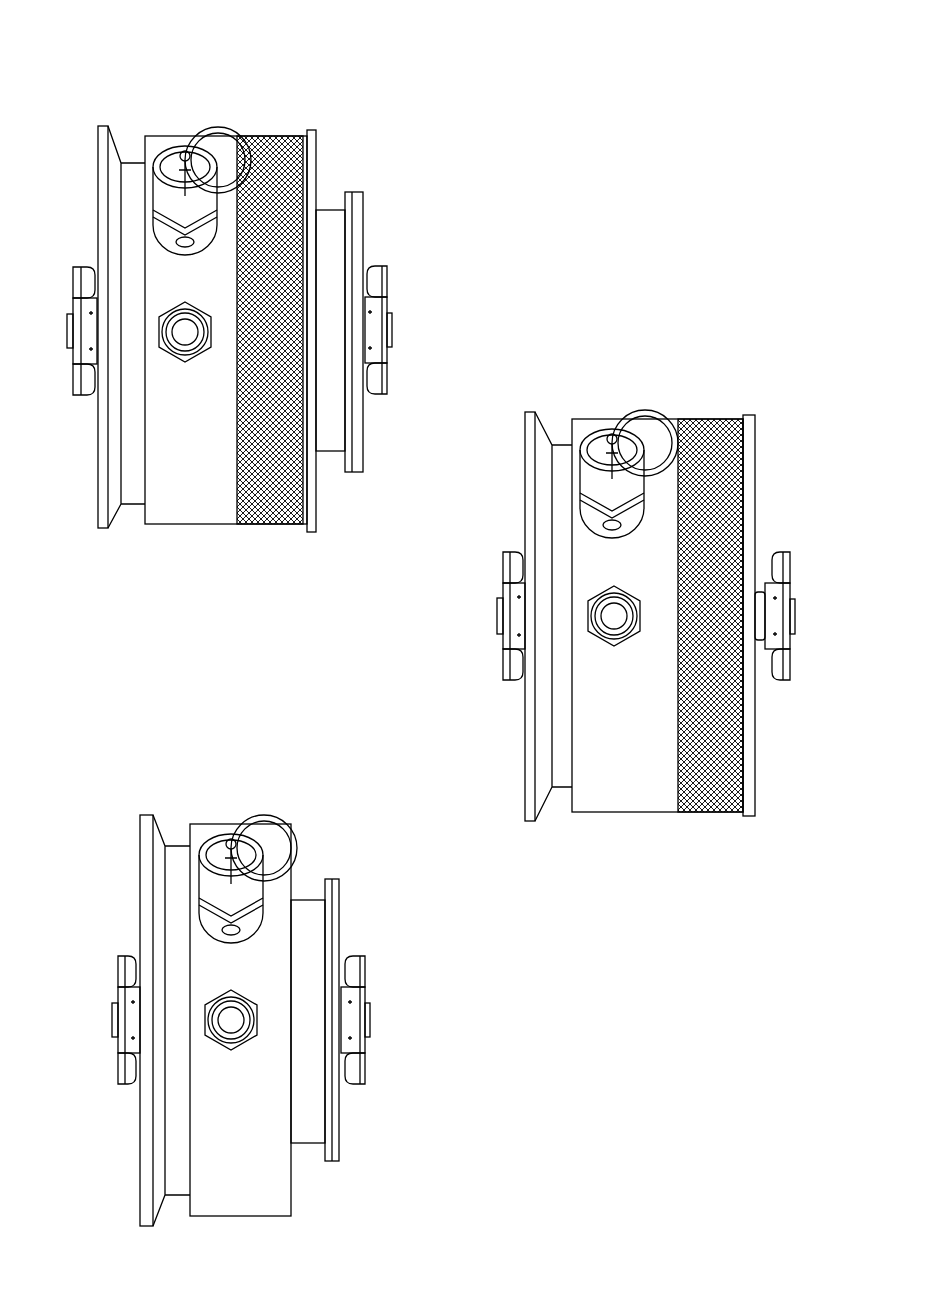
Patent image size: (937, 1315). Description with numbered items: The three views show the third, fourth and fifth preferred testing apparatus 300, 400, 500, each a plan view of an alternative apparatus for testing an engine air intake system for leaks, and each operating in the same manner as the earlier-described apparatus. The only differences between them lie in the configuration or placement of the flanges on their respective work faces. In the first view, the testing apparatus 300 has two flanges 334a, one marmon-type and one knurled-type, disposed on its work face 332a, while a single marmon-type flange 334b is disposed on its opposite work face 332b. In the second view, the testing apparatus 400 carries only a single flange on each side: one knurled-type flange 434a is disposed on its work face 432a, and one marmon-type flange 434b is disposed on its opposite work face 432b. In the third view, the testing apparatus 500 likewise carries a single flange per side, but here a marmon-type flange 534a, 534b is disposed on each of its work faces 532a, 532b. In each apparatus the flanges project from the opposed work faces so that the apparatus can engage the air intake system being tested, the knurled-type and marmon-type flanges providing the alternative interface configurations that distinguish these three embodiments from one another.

In FIG. 5a, the testing apparatus 300 is at (437, 143).
In FIG. 5a, the flange 334b is at (132, 153).
In FIG. 5a, the flanges 334a is at (328, 208).
In FIG. 5a, the work face 332b is at (64, 330).
In FIG. 5a, the work face 332a is at (412, 329).
In FIG. 5b, the testing apparatus 400 is at (697, 270).
In FIG. 5b, the flange 434b is at (564, 448).
In FIG. 5b, the flange 434a is at (712, 414).
In FIG. 5b, the work face 432b is at (496, 616).
In FIG. 5b, the work face 432a is at (797, 617).
In FIG. 5c, the testing apparatus 500 is at (460, 1052).
In FIG. 5c, the flange 534b is at (176, 840).
In FIG. 5c, the flange 534a is at (308, 894).
In FIG. 5c, the work face 532b is at (110, 1019).
In FIG. 5c, the work face 532a is at (372, 1019).